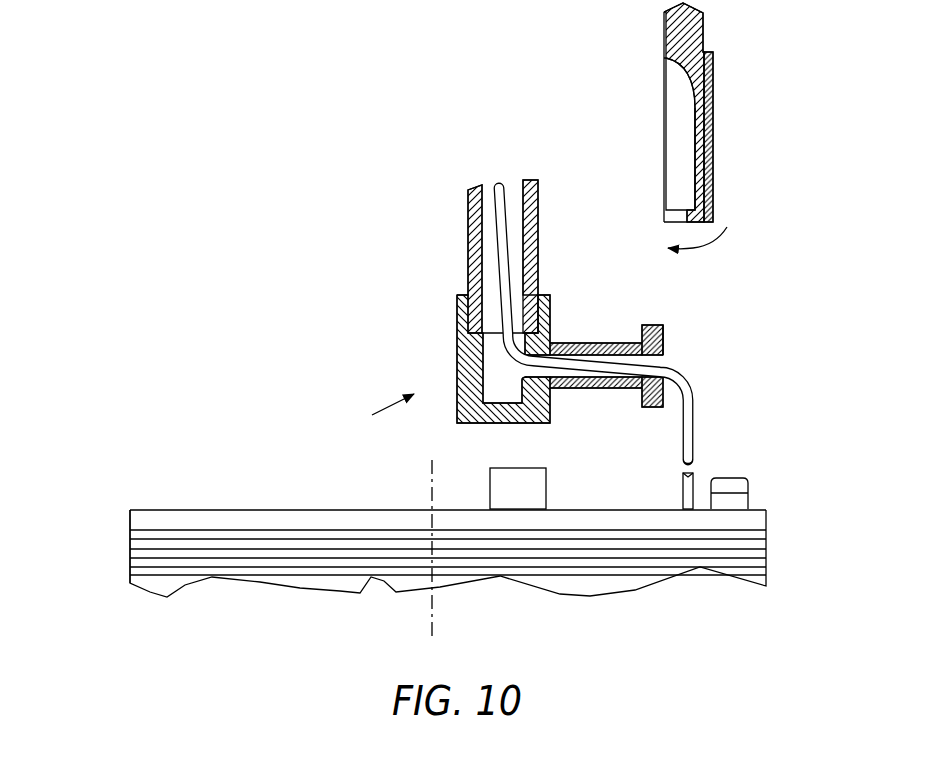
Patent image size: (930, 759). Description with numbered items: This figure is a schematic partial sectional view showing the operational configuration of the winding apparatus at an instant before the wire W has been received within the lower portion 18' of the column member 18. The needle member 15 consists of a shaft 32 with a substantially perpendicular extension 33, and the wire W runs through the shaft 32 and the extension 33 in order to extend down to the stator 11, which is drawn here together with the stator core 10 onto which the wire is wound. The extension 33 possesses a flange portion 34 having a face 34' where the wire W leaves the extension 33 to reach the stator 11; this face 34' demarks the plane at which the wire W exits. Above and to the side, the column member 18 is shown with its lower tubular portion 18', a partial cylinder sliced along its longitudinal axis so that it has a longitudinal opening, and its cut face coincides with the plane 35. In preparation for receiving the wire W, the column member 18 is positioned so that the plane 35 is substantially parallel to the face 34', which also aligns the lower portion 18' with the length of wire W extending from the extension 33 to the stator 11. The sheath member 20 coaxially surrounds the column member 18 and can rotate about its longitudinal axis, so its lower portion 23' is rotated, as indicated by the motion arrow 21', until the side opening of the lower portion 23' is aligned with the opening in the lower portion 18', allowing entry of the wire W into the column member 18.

The circuit board 10 is at (312, 517).
The stator 11 is at (118, 541).
The needle member 15 is at (386, 408).
The column member 18 is at (725, 112).
The tubular portion 18' is at (744, 159).
The sheath member 20 is at (714, 98).
The direction of movement 21' is at (732, 250).
The lower portion of sheath member 23' is at (742, 196).
The shaft 32 is at (467, 252).
The extension 33 is at (603, 343).
The flange portion 34 is at (680, 341).
The face 34' is at (710, 332).
The plane 35 is at (664, 137).
The wire W is at (518, 181).